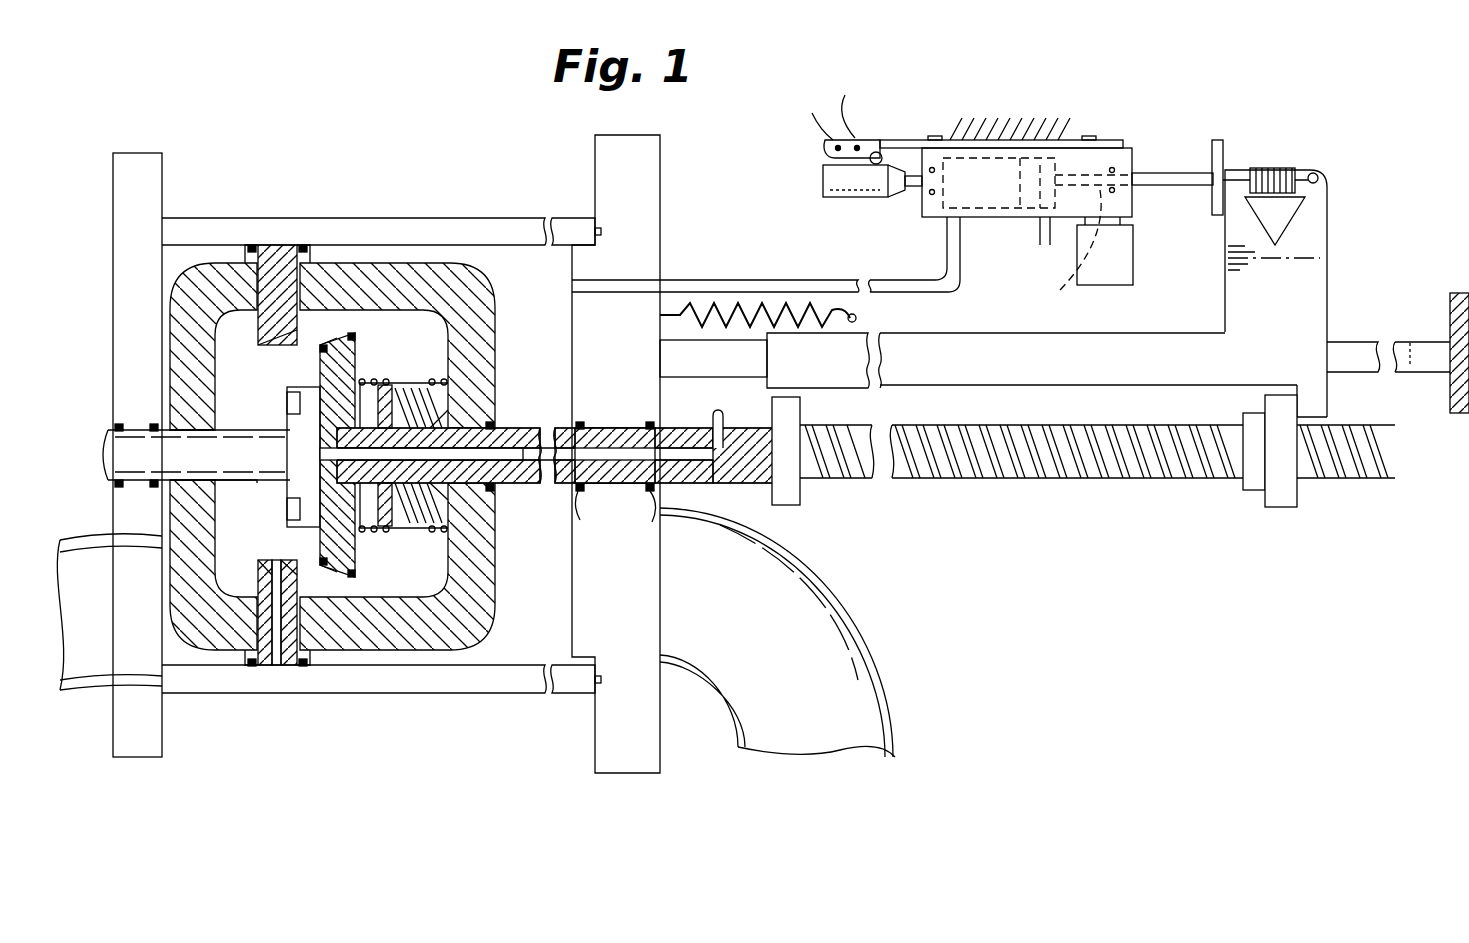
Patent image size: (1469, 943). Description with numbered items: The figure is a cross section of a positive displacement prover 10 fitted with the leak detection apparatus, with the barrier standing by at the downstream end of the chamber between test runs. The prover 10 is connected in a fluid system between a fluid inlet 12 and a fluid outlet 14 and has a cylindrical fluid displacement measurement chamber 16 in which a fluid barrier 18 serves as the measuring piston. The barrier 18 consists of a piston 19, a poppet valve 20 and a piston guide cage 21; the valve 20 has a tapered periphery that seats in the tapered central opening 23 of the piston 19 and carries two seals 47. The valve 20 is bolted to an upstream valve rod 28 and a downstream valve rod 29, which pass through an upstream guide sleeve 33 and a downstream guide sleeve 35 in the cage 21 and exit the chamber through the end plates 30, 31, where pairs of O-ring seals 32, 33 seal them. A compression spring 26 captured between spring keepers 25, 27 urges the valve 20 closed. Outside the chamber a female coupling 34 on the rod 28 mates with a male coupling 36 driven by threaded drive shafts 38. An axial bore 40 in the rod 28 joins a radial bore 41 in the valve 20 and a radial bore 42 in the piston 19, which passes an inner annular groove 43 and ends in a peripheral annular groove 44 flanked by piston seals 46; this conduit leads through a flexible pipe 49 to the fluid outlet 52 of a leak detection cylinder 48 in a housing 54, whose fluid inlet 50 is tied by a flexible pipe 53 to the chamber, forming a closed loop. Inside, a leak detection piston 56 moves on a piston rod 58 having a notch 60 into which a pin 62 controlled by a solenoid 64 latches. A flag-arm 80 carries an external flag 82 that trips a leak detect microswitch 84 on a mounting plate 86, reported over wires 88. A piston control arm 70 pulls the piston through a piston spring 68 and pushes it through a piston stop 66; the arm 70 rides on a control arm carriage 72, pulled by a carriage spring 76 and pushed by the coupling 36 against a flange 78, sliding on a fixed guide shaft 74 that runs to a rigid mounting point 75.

The positive displacement prover 10 is at (483, 150).
The fluid inlet 12 is at (808, 700).
The fluid outlet 14 is at (125, 610).
The fluid displacement measurement chamber 16 is at (288, 243).
The fluid barrier 18 is at (162, 293).
The piston 19 is at (296, 595).
The poppet valve 20 is at (352, 338).
The piston guide cage 21 is at (226, 514).
The tapered central opening 23 is at (262, 350).
The spring keeper 25 is at (437, 540).
The compression spring 26 is at (376, 385).
The spring keeper 27 is at (370, 530).
The upstream valve rod 28 is at (726, 482).
The downstream valve rod 29 is at (120, 484).
The end plate 30 is at (640, 376).
The end plate 31 is at (158, 218).
The O-ring type seals 32 is at (578, 495).
The upstream valve rod guide sleeve 33 is at (148, 422).
The female coupling 34 is at (800, 505).
The downstream valve rod guide sleeve 35 is at (288, 415).
The male coupling 36 is at (1275, 508).
The threaded drive shafts 38 is at (1012, 480).
The axial bore 40 is at (516, 487).
The radial bore 41 is at (330, 462).
The radial bore 42 is at (262, 580).
The annular groove 43 is at (285, 560).
The annular groove 44 is at (280, 245).
The O-ring type piston seals 46 is at (248, 668).
The O-ring type seals 47 is at (325, 345).
The leak detection cylinder 48 is at (1000, 218).
The flexible fluid pipe 49 is at (945, 258).
The fluid inlet 50 is at (945, 222).
The fluid outlet 52 is at (1068, 250).
The flexible fluid pipe 53 is at (920, 292).
The housing 54 is at (1133, 152).
The leak detection piston 56 is at (1040, 220).
The piston rod 58 is at (1180, 172).
The notch 60 is at (1165, 190).
The pin 62 is at (1062, 282).
The solenoid 64 is at (1122, 265).
The piston stop 66 is at (1222, 145).
The piston spring 68 is at (1272, 168).
The piston control arm 70 is at (1290, 308).
The control arm carriage 72 is at (1088, 376).
The fixed guide shaft 74 is at (728, 370).
The rigid mounting point 75 is at (1450, 306).
The carriage spring 76 is at (812, 290).
The flange 78 is at (1327, 396).
The flag-arm 80 is at (912, 188).
The flag 82 is at (830, 196).
The leak detect microswitch 84 is at (828, 152).
The mounting plate 86 is at (893, 140).
The wires 88 is at (836, 106).